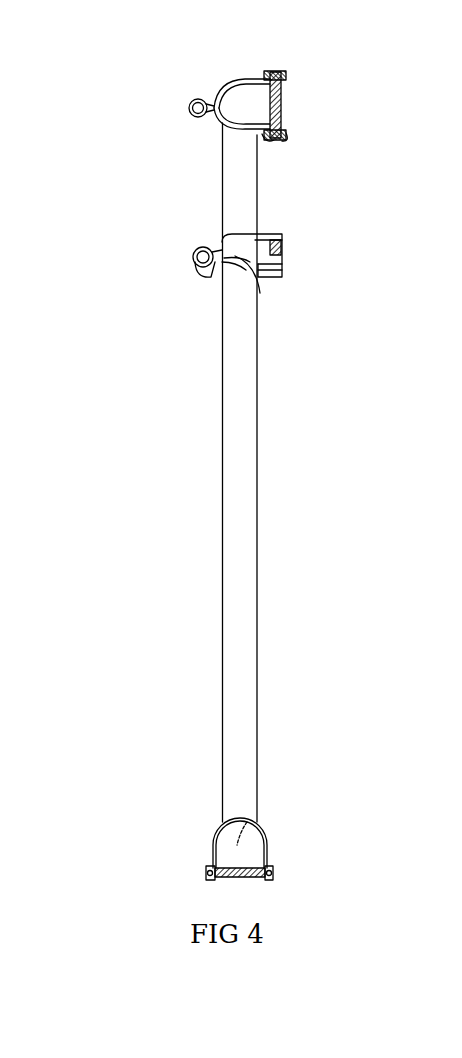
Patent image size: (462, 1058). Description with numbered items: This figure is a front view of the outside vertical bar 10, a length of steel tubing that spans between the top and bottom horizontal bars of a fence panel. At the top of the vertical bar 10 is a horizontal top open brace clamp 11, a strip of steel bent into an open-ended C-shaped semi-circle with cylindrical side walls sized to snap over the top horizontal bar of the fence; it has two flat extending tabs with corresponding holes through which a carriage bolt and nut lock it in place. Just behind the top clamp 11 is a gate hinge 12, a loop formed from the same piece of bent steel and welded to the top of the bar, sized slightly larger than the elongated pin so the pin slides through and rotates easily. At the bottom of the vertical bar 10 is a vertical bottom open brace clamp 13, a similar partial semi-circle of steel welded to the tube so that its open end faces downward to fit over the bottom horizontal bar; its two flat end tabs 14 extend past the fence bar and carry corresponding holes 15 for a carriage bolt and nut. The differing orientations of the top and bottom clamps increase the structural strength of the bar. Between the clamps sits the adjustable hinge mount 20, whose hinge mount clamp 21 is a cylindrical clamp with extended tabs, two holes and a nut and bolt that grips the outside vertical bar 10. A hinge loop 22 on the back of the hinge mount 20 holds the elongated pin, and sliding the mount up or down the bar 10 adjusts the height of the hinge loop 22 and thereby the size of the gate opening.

The outside vertical bar 10 is at (240, 483).
The horizontal top open brace clamp 11 is at (262, 108).
The gate hinge 12 is at (185, 100).
The vertical bottom open brace clamp 13 is at (255, 820).
The flat end tabs 14 is at (282, 82).
The holes 15 is at (280, 134).
The adjustable hinge mount 20 is at (283, 250).
The hinge mount clamp 21 is at (258, 282).
The hinge loop 22 is at (195, 260).